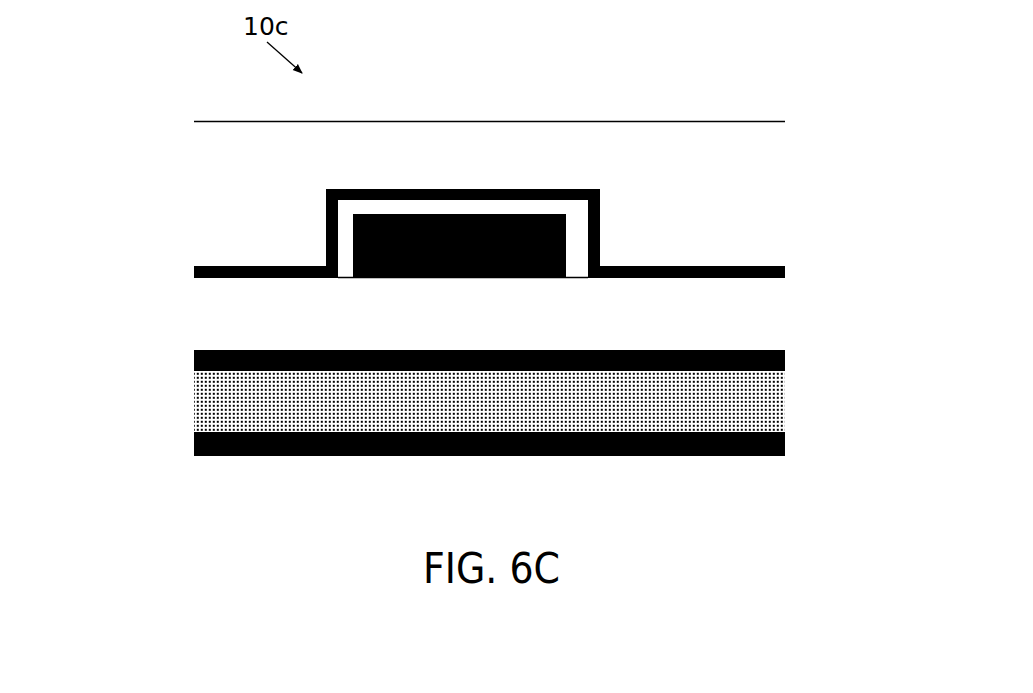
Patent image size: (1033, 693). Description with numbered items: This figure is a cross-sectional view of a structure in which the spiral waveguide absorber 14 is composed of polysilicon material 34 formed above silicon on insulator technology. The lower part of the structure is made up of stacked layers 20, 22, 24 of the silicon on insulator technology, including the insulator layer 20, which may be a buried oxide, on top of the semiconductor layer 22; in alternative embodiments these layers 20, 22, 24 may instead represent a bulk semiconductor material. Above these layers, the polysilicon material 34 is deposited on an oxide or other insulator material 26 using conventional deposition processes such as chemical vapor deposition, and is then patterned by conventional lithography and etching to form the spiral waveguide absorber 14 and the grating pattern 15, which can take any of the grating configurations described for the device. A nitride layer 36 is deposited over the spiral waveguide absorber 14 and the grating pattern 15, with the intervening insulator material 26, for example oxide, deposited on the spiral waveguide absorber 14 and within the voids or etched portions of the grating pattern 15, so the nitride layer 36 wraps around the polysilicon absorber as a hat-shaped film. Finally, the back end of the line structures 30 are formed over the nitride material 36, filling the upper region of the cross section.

The back end of the line structures 30 is at (700, 191).
The insulator material 26 is at (580, 242).
The nitride layer 36 is at (226, 266).
The polysilicon material 34 is at (357, 272).
The spiral waveguide absorber 14 is at (459, 246).
The grating pattern 15 is at (459, 246).
The layer 24 is at (198, 353).
The insulator layer 20 is at (723, 415).
The semiconductor layer 22 is at (759, 455).